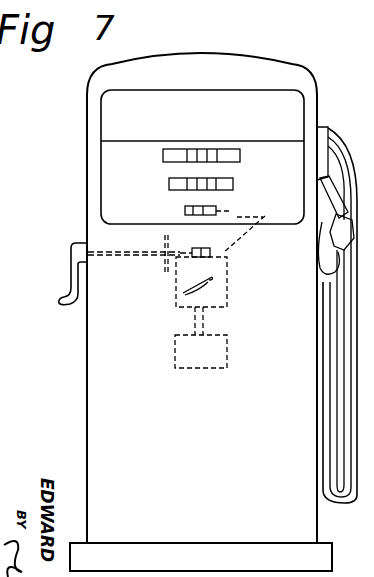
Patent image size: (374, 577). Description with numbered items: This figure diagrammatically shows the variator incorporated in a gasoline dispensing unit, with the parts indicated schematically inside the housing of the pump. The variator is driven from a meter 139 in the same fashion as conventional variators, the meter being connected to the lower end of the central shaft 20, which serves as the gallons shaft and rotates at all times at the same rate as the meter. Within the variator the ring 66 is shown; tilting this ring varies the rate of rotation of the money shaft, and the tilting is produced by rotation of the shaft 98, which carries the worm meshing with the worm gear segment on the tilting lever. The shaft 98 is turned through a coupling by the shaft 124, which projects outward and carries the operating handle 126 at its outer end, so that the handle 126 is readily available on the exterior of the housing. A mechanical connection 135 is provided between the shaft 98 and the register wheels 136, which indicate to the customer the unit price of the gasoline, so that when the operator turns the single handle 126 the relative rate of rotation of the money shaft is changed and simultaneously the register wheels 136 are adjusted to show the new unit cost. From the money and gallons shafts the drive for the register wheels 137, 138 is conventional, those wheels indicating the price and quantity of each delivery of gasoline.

The register wheels 138 is at (203, 149).
The register wheels 137 is at (190, 178).
The register wheels 136 is at (185, 209).
The mechanical connection 135 is at (241, 217).
The shaft 98 is at (220, 248).
The shaft 124 is at (106, 258).
The operating handle 126 is at (70, 280).
The ring 66 is at (228, 283).
The central shaft 20 is at (206, 323).
The meter 139 is at (229, 362).